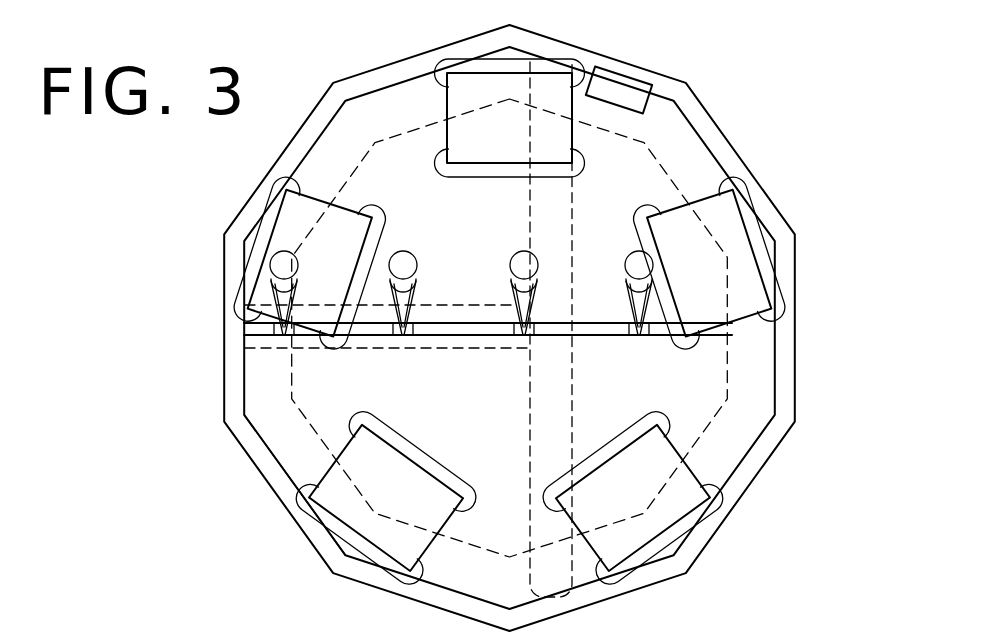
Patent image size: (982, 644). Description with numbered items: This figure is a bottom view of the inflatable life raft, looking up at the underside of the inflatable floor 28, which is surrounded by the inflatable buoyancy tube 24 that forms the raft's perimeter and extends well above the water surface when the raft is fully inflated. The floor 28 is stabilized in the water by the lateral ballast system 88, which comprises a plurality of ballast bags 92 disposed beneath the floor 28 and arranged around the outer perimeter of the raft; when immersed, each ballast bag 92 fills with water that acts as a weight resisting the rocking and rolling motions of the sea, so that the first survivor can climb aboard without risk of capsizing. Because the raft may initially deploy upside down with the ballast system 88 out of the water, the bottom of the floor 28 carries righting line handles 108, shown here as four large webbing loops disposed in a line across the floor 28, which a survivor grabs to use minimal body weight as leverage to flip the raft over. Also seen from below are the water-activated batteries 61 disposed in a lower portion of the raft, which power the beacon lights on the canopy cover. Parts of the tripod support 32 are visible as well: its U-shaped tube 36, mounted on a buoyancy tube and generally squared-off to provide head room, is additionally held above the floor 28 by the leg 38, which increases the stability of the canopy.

The buoyancy tube 24 is at (231, 267).
The floor 28 is at (313, 378).
The tripod support 32 is at (582, 237).
The U-shaped tube 36 is at (553, 220).
The leg 38 is at (482, 343).
The water-activated batteries 61 is at (631, 71).
The lateral ballast system 88 is at (779, 201).
The ballast bag 92 is at (518, 84).
The righting line handles 108 is at (617, 337).